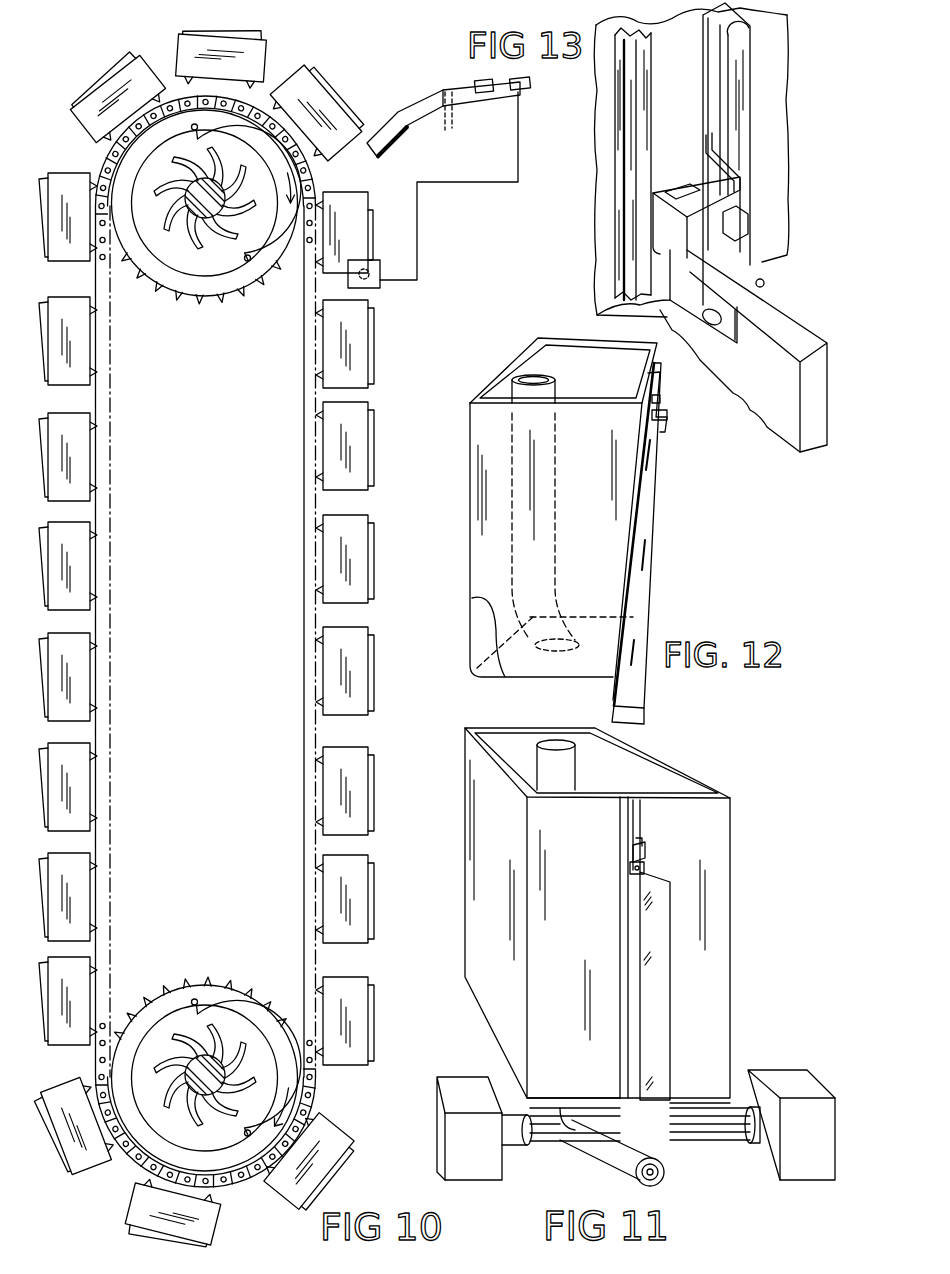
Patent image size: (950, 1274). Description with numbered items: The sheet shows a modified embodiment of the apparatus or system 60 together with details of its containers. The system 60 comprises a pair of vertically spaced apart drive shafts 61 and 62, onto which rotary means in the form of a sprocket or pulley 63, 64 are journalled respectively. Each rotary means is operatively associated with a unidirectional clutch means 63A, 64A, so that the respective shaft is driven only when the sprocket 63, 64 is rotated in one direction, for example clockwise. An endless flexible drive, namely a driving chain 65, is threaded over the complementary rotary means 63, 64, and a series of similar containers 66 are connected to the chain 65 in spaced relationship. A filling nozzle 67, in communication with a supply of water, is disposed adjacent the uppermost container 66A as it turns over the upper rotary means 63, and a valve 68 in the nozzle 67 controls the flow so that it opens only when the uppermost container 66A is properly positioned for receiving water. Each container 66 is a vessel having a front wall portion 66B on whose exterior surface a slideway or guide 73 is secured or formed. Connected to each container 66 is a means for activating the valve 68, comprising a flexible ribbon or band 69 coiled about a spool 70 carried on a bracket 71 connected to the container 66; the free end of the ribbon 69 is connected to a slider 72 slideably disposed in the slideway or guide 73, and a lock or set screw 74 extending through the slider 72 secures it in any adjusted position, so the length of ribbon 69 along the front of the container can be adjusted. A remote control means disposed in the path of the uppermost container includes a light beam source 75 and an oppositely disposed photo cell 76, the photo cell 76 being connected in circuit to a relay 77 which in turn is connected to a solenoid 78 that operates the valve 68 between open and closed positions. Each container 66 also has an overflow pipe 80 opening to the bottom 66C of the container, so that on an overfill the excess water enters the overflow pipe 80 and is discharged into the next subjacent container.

In FIG. 10, the apparatus or system 60 is at (64, 140).
In FIG. 10, the drive shaft 61 is at (185, 215).
In FIG. 10, the drive shaft 62 is at (216, 1058).
In FIG. 10, the sprocket or pulley 63 is at (246, 284).
In FIG. 10, the unidirectional clutch means 63A is at (210, 228).
In FIG. 10, the sprocket or pulley 64 is at (255, 1000).
In FIG. 10, the unidirectional clutch means 64A is at (168, 1060).
In FIG. 10, the driving chain 65 is at (304, 503).
In FIG. 10, the container 66 is at (76, 446).
In FIG. 12, the container 66 is at (480, 522).
In FIG. 11, the container 66 is at (727, 912).
In FIG. 10, the uppermost container 66A is at (345, 202).
In FIG. 10, the front wall portion 66B is at (370, 318).
In FIG. 11, the front wall portion 66B is at (726, 1000).
In FIG. 13, the front wall portion 66B is at (597, 115).
In FIG. 12, the bottom of the container 66C is at (478, 600).
In FIG. 10, the filling nozzle 67 is at (378, 140).
In FIG. 10, the valve 68 is at (440, 140).
In FIG. 10, the flexible ribbon or band 69 is at (371, 222).
In FIG. 12, the flexible ribbon or band 69 is at (652, 568).
In FIG. 11, the flexible ribbon or band 69 is at (670, 976).
In FIG. 11, the spool 70 is at (636, 1186).
In FIG. 11, the bracket 71 is at (560, 1130).
In FIG. 12, the slider 72 is at (660, 430).
In FIG. 11, the slider 72 is at (628, 868).
In FIG. 13, the slider 72 is at (640, 200).
In FIG. 12, the slideway or guide 73 is at (645, 525).
In FIG. 11, the slideway or guide 73 is at (618, 930).
In FIG. 13, the slideway or guide 73 is at (750, 100).
In FIG. 11, the lock or set screw 74 is at (645, 852).
In FIG. 13, the lock or set screw 74 is at (738, 224).
In FIG. 11, the light beam source 75 is at (460, 1077).
In FIG. 10, the photo cell 76 is at (380, 288).
In FIG. 11, the photo cell 76 is at (770, 1070).
In FIG. 10, the relay 77 is at (505, 95).
In FIG. 10, the solenoid 78 is at (476, 84).
In FIG. 12, the overflow pipe 80 is at (516, 375).